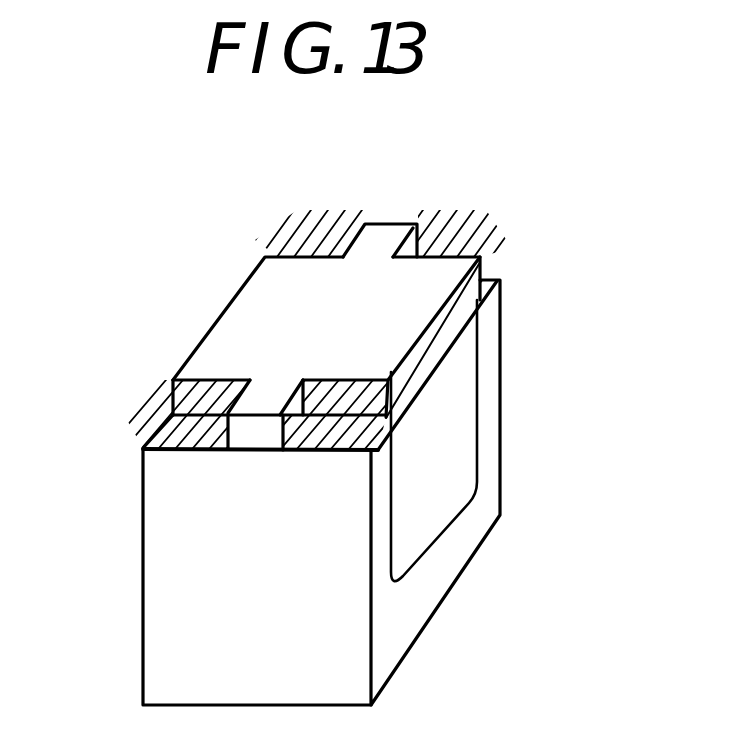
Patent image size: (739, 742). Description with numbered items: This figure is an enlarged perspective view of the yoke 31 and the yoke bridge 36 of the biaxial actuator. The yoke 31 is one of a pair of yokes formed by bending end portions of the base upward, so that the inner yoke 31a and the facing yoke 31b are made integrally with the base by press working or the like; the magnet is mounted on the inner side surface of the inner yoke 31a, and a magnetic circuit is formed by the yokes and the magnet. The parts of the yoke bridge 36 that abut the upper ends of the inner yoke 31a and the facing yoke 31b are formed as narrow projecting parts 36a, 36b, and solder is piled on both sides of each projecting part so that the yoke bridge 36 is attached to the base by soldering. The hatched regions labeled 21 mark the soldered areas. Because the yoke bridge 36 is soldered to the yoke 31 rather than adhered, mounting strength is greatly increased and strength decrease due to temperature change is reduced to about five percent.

The electrode 21 is at (302, 233).
The yoke 31 is at (450, 553).
The inner yoke 31a is at (485, 386).
The facing yoke 31b is at (182, 673).
The yoke bridge 36 is at (267, 328).
The projecting part 36a is at (388, 232).
The projecting part 36b is at (257, 420).